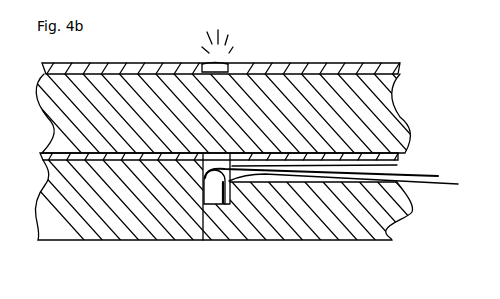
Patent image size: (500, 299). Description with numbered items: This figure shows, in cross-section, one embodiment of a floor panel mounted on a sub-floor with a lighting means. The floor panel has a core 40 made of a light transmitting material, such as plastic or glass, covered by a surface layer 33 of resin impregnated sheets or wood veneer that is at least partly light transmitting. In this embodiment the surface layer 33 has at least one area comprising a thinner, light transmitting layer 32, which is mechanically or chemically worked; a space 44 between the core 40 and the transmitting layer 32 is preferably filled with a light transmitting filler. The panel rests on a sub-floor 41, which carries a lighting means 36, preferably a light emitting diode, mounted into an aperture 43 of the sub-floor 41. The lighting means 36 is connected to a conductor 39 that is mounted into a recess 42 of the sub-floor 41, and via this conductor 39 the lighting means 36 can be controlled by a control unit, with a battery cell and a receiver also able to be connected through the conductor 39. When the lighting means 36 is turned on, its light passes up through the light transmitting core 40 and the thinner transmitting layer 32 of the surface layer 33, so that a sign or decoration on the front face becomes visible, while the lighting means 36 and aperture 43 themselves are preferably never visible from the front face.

The transmitting layer 32 is at (229, 64).
The surface layer 33 is at (383, 71).
The lighting means 36 is at (213, 193).
The conductor 39 is at (440, 174).
The core 40 is at (402, 117).
The sub-floor 41 is at (412, 213).
The recess 42 is at (316, 178).
The aperture 43 is at (229, 192).
The space 44 is at (204, 65).